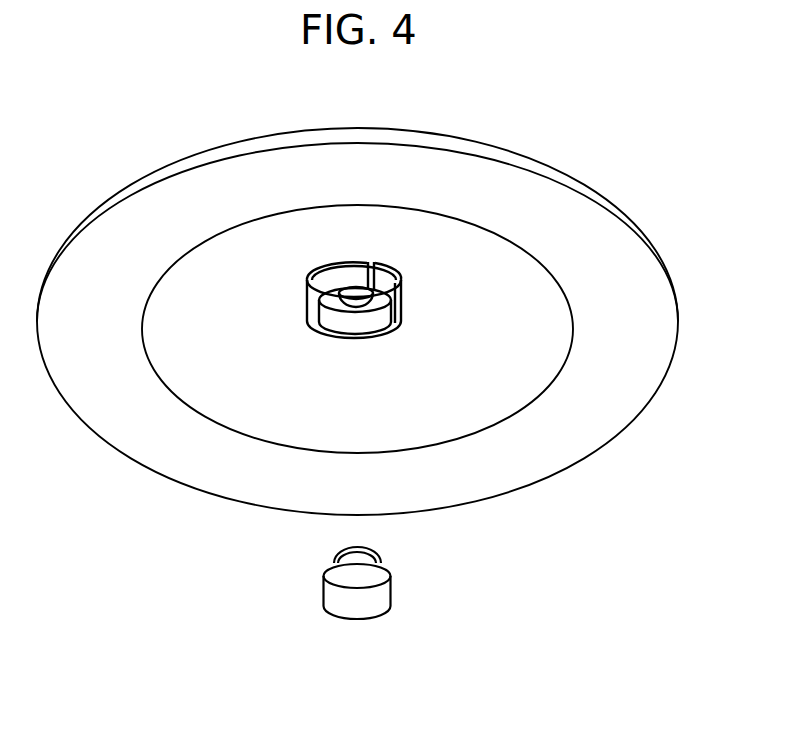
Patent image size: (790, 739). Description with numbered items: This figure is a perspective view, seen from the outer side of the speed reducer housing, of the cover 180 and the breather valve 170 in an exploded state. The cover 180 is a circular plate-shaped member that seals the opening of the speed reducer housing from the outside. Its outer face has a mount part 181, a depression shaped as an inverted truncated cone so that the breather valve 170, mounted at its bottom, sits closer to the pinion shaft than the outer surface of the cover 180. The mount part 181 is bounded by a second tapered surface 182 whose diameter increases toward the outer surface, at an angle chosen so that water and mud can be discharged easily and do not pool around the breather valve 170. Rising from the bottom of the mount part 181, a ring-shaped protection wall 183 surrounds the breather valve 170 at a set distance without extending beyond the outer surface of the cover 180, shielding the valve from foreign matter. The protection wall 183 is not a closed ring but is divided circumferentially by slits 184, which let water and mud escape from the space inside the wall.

The breather valve 170 is at (361, 616).
The cover 180 is at (517, 164).
The mount part 181 is at (275, 248).
The second tapered surface 182 is at (284, 380).
The protection wall 183 is at (386, 282).
The slits 184 is at (396, 337).